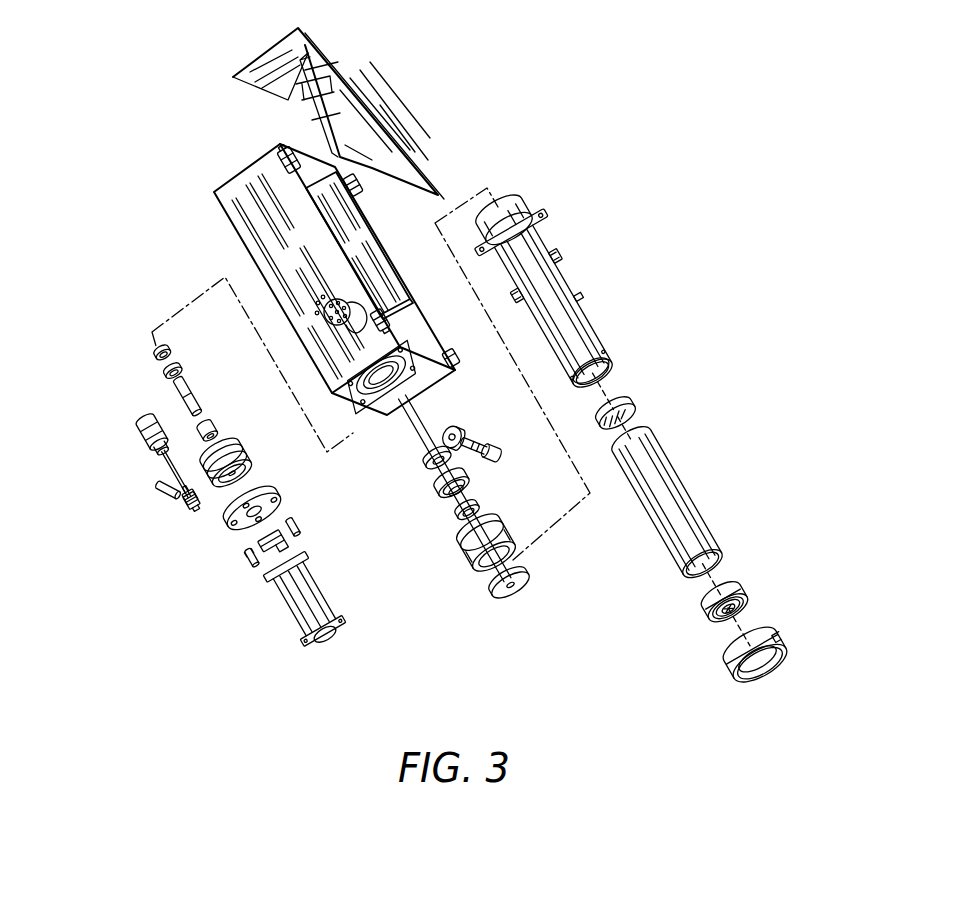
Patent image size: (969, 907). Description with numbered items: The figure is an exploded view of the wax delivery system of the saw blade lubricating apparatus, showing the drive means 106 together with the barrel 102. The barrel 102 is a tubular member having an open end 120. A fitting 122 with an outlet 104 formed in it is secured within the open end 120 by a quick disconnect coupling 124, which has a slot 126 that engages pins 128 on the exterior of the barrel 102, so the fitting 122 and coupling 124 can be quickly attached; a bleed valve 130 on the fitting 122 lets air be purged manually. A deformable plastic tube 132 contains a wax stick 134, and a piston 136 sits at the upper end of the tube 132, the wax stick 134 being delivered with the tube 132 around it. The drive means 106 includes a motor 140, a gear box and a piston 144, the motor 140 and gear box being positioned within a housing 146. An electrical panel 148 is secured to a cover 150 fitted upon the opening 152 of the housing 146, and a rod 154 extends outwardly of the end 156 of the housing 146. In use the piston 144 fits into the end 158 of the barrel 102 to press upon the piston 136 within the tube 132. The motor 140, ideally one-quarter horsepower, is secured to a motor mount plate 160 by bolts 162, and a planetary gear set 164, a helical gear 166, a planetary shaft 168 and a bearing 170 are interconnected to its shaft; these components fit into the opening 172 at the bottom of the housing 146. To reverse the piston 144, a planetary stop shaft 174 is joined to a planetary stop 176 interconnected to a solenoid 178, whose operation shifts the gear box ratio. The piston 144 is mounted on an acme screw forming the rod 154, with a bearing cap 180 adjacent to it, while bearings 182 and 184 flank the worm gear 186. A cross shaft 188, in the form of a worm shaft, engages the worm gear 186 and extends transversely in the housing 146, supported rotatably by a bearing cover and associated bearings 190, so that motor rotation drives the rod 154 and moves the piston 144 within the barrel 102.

The barrel 102 is at (583, 300).
The outlet 104 is at (728, 621).
The drive means 106 is at (232, 259).
The open end 120 is at (617, 367).
The fitting 122 is at (748, 597).
The quick disconnect coupling 124 is at (735, 672).
The slot 126 is at (747, 634).
The pins 128 is at (617, 344).
The bleed valve 130 is at (718, 617).
The tube 132 is at (682, 484).
The wax stick 134 is at (725, 558).
The piston 136 is at (640, 410).
The motor 140 is at (293, 624).
The piston 144 is at (467, 433).
The housing 146 is at (232, 184).
The electrical panel 148 is at (335, 138).
The cover 150 is at (380, 101).
The opening 152 is at (363, 228).
The rod 154 is at (415, 437).
The end 156 is at (430, 375).
The end 158 is at (527, 204).
The motor mount plate 160 is at (273, 485).
The bolts 162 is at (252, 568).
The planetary gear set 164 is at (243, 452).
The helical gear 166 is at (211, 421).
The planetary shaft 168 is at (192, 391).
The bearing 170 is at (170, 345).
The opening 172 is at (396, 348).
The planetary stop shaft 174 is at (163, 495).
The planetary stop 176 is at (192, 504).
The solenoid 178 is at (144, 441).
The bearing cap 180 is at (497, 518).
The bearing 182 is at (457, 517).
The bearing 184 is at (430, 467).
The worm gear 186 is at (440, 493).
The cross shaft 188 is at (478, 444).
The bearing cover and associated bearings 190 is at (350, 305).